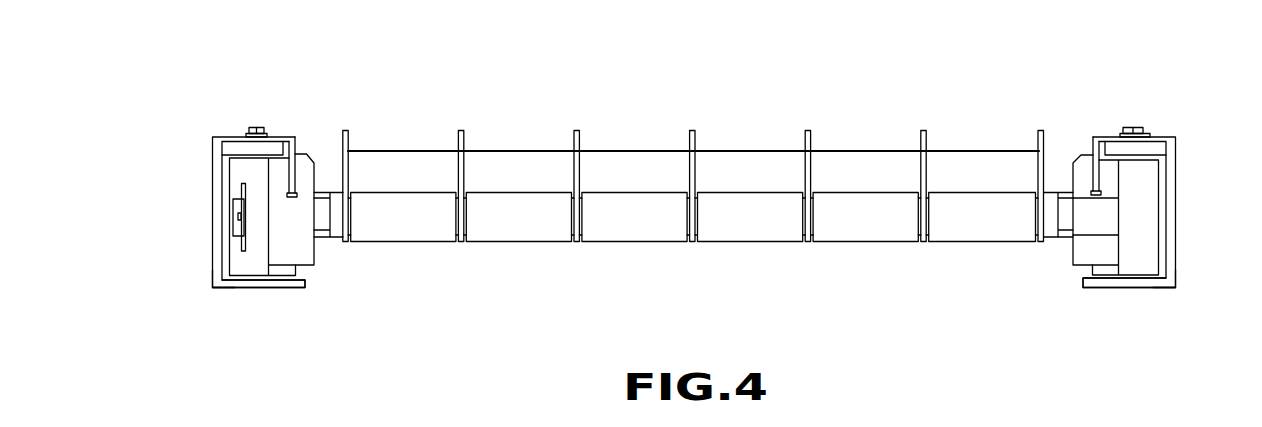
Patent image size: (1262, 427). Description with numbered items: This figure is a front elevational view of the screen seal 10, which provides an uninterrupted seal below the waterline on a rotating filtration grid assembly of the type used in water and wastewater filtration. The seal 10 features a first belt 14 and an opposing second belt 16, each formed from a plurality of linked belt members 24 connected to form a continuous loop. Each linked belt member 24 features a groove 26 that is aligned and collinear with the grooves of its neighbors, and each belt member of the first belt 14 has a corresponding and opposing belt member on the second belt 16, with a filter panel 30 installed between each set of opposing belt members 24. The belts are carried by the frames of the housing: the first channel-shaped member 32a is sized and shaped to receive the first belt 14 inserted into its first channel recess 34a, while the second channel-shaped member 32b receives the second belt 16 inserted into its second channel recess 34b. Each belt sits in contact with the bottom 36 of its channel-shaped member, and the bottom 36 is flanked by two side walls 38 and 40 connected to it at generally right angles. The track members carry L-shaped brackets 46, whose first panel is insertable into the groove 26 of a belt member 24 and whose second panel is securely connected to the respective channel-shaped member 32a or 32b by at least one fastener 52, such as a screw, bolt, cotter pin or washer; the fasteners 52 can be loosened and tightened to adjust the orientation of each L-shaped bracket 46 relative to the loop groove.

The seal 10 is at (437, 68).
The first belt 14 is at (281, 263).
The second belt 16 is at (1107, 262).
The linked belt member 24 is at (311, 254).
The groove 26 is at (291, 198).
The filter panel 30 is at (619, 150).
The first channel-shaped member 32a is at (212, 289).
The second channel-shaped member 32b is at (1176, 290).
The first channel recess 34a is at (228, 180).
The second channel recess 34b is at (1164, 186).
The bottom 36 is at (213, 212).
The side wall 38 is at (225, 142).
The side wall 40 is at (240, 289).
The L-shaped bracket 46 is at (290, 136).
The fastener 52 is at (256, 127).